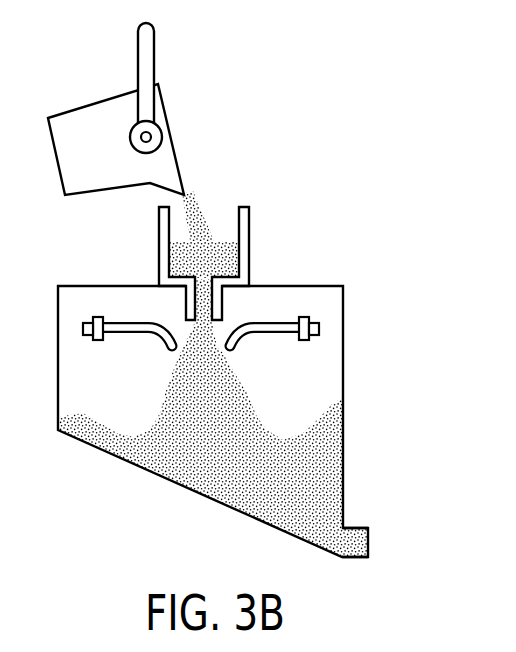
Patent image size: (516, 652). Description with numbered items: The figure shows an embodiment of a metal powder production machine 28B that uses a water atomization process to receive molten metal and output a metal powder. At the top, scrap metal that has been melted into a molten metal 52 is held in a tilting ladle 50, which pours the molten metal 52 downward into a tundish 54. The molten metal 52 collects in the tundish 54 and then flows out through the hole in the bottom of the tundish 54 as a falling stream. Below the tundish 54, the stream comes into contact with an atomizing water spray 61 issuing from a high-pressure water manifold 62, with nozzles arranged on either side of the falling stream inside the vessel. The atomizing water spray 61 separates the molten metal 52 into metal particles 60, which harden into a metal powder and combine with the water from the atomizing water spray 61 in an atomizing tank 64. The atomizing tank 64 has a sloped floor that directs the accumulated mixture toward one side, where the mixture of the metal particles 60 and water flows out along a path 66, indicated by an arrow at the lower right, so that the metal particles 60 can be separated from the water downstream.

The metal powder production machine 28B is at (146, 98).
The ladle 50 is at (171, 138).
The molten metal 52 is at (200, 205).
The tundish 54 is at (249, 245).
The metal particles 60 is at (232, 392).
The atomizing water spray 61 is at (197, 347).
The high-pressure water manifold 62 is at (280, 320).
The atomizing tank 64 is at (343, 350).
The path 66 is at (414, 542).